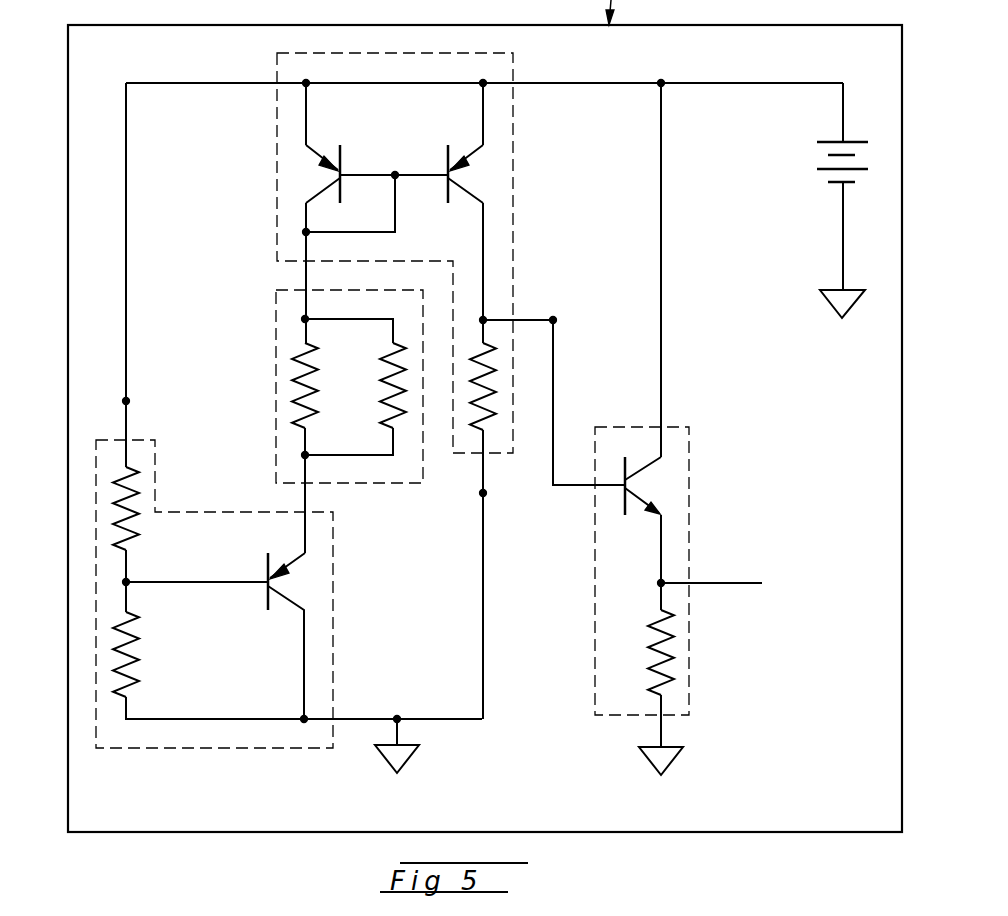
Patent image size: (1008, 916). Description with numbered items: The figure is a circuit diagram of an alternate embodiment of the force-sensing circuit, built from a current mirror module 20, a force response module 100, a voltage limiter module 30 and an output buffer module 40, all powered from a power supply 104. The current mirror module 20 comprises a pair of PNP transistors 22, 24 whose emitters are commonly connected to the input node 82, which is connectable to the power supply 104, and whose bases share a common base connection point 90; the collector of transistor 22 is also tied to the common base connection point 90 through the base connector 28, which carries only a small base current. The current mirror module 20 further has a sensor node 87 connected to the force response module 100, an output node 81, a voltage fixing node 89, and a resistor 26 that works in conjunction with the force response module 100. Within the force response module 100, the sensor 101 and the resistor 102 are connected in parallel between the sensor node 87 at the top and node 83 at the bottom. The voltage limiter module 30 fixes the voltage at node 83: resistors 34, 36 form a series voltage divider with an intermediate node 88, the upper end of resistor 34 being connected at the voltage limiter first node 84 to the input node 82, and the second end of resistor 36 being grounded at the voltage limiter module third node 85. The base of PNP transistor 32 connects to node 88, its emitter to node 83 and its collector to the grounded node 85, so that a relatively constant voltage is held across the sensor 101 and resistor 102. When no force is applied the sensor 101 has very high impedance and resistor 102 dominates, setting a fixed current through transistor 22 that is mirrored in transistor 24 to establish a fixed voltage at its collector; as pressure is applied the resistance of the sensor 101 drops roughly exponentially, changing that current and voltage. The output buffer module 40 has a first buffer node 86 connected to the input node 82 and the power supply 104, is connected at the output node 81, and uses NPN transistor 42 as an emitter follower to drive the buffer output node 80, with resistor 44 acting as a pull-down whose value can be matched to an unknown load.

The current mirror module 20 is at (268, 115).
The transistor 22 is at (305, 180).
The transistor 24 is at (478, 178).
The resistor 26 is at (488, 415).
The base connector 28 is at (396, 203).
The voltage limiter module 30 is at (190, 758).
The transistor 32 is at (303, 589).
The resistor 34 is at (132, 540).
The resistor 36 is at (130, 667).
The output buffer module 40 is at (700, 651).
The transistor 42 is at (653, 482).
The resistor 44 is at (652, 687).
The buffer output node 80 is at (762, 583).
The output node 81 is at (553, 320).
The input node 82 is at (308, 85).
The node 83 is at (304, 232).
The voltage limiter first node 84 is at (127, 401).
The voltage limiter module third node 85 is at (303, 719).
The first buffer node 86 is at (662, 83).
The sensor node 87 is at (305, 319).
The intermediate node 88 is at (126, 582).
The voltage fixing node 89 is at (482, 493).
The common base connection point 90 is at (396, 174).
The force response module 100 is at (266, 357).
The sensor 101 is at (400, 413).
The resistor 102 is at (298, 417).
The power supply 104 is at (818, 157).